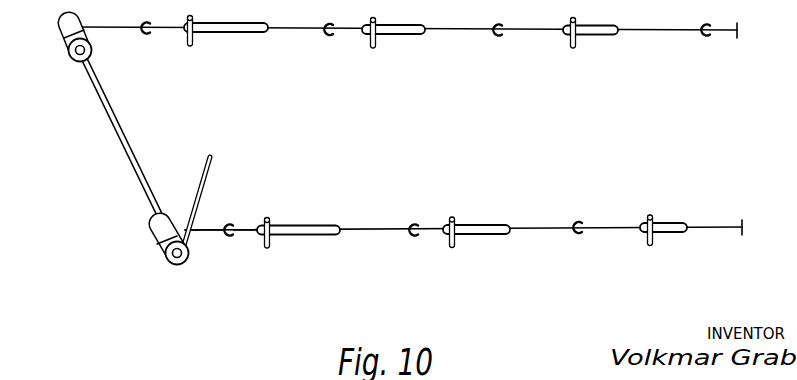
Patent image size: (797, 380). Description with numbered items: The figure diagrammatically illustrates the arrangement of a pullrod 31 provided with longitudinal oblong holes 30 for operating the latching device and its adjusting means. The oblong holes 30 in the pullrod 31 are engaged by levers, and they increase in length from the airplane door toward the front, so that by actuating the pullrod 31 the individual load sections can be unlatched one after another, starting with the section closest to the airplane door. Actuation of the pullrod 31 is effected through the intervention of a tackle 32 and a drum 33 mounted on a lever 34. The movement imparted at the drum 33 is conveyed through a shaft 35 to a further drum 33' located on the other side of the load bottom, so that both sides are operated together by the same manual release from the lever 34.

The oblong holes 30 is at (302, 233).
The pullrod 31 is at (240, 233).
The tackle 32 is at (215, 233).
The drum 33 is at (158, 253).
The further drum 33' is at (110, 55).
The lever 34 is at (213, 172).
The shaft 35 is at (137, 160).